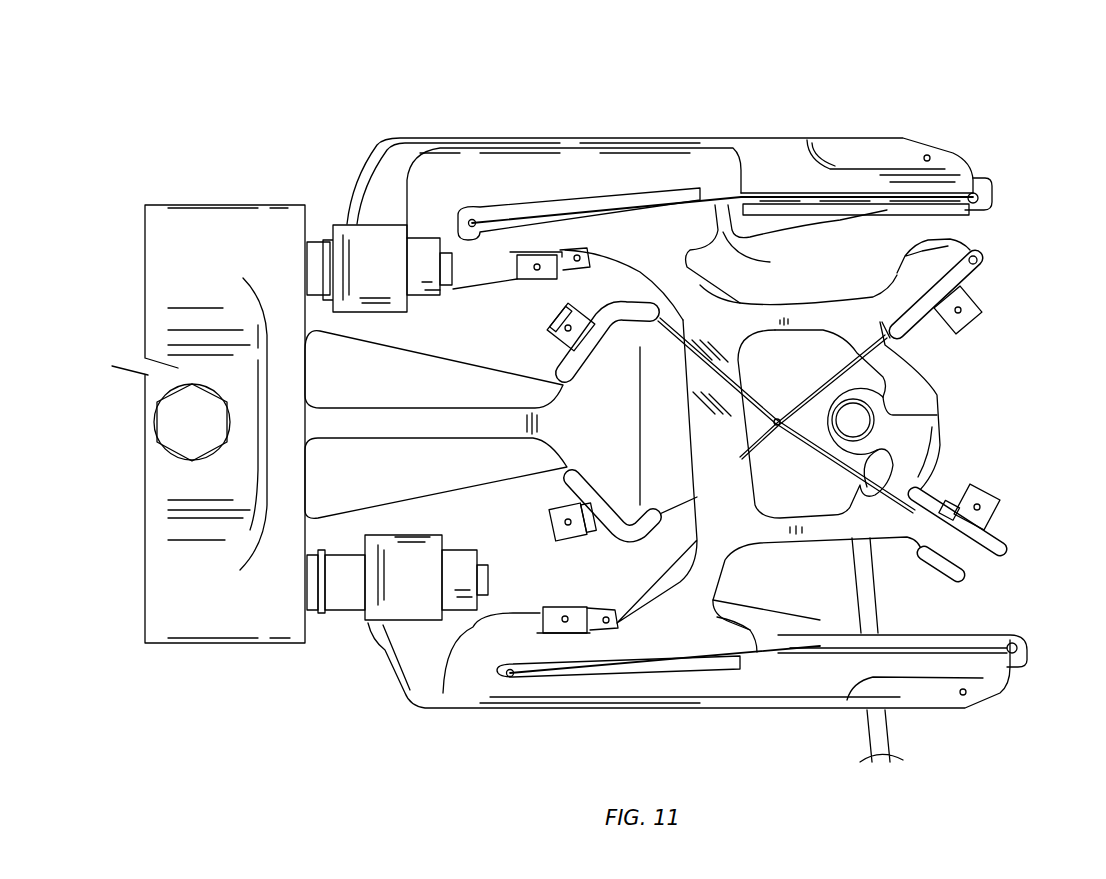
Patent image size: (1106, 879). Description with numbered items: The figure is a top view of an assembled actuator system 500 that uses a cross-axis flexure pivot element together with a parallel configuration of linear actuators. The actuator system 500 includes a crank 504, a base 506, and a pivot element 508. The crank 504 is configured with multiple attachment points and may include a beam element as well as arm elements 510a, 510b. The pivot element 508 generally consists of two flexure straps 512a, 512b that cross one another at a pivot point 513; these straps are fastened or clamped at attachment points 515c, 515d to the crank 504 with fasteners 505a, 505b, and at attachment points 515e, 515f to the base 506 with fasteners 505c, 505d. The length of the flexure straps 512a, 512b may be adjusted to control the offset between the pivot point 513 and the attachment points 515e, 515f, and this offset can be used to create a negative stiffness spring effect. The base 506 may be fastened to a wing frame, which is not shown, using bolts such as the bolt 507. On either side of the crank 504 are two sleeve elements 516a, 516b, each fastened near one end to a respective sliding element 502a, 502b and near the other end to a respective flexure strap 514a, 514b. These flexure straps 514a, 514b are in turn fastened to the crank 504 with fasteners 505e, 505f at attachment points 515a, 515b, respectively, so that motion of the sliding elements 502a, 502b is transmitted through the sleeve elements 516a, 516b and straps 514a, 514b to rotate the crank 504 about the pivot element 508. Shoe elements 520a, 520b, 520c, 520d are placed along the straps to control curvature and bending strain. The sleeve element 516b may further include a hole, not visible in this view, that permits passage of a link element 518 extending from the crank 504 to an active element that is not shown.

The actuator system 500 is at (258, 80).
The sliding element 502a is at (318, 262).
The sliding element 502b is at (337, 607).
The crank 504 is at (960, 390).
The fastener 505a is at (977, 293).
The fastener 505b is at (1000, 520).
The fastener 505c is at (550, 330).
The fastener 505d is at (553, 530).
The fastener 505e is at (515, 272).
The fastener 505f is at (477, 640).
The base 506 is at (470, 445).
The bolt 507 is at (187, 417).
The pivot element 508 is at (777, 452).
The arm element 510a is at (725, 278).
The arm element 510b is at (697, 572).
The flexure strap 512a is at (815, 390).
The flexure strap 512b is at (662, 352).
The pivot point 513 is at (777, 418).
The flexure strap 514a is at (730, 232).
The flexure strap 514b is at (757, 652).
The attachment point 515a is at (535, 247).
The attachment point 515b is at (567, 637).
The attachment point 515c is at (938, 287).
The attachment point 515d is at (940, 572).
The attachment point 515e is at (592, 340).
The attachment point 515f is at (598, 494).
The sleeve element 516a is at (690, 168).
The sleeve element 516b is at (713, 690).
The link element 518 is at (887, 742).
The shoe element 520a is at (527, 210).
The shoe element 520b is at (603, 675).
The shoe element 520c is at (947, 214).
The shoe element 520d is at (963, 634).